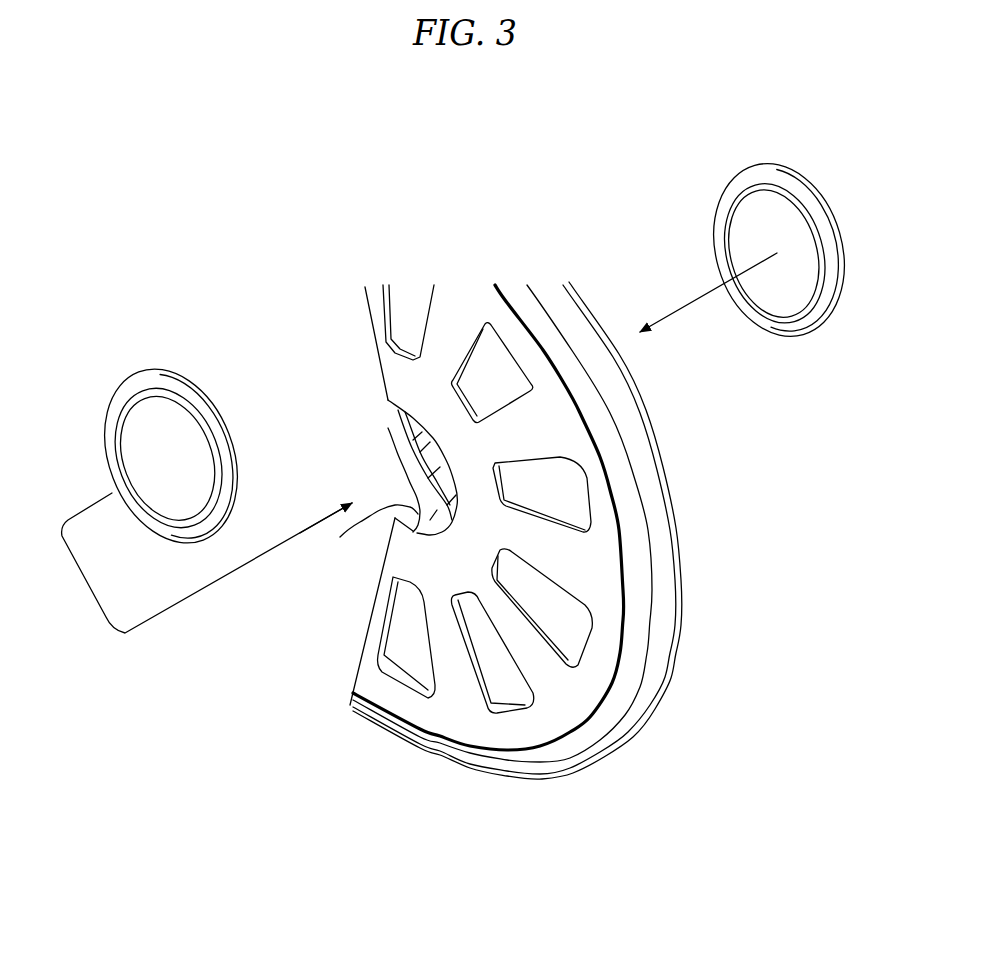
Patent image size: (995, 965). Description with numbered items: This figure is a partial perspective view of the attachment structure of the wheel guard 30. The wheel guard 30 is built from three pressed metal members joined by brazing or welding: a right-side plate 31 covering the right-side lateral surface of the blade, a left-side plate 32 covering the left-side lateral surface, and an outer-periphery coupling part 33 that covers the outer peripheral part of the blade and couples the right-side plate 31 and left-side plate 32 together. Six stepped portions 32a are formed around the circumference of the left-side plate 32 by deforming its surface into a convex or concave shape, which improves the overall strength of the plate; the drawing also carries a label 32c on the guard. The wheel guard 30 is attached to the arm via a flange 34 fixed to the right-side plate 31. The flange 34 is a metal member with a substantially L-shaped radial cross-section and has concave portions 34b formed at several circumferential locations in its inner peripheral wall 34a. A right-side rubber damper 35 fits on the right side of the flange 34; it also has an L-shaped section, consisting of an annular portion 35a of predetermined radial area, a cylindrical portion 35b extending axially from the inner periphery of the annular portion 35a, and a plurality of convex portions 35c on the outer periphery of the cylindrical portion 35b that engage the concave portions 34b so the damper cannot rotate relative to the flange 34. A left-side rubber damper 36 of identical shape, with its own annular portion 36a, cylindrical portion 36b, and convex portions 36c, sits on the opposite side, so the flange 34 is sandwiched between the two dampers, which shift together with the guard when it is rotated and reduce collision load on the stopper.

The wheel guard 30 is at (672, 663).
The right-side plate 31 is at (368, 508).
The left-side plate 32 is at (477, 720).
The stepped portions 32a is at (490, 665).
The rim flange 32c is at (450, 453).
The outer-periphery coupling part 33 is at (657, 518).
The flange 34 is at (388, 418).
The inner peripheral wall 34a is at (406, 440).
The concave portions 34b is at (413, 465).
The right-side rubber damper 35 is at (793, 158).
The annular portion 35a is at (810, 205).
The cylindrical portion 35b is at (830, 278).
The convex portions 35c is at (817, 230).
The left-side rubber damper 36 is at (83, 392).
The annular portion 36a is at (147, 380).
The cylindrical portion 36b is at (185, 422).
The convex portions 36c is at (207, 435).